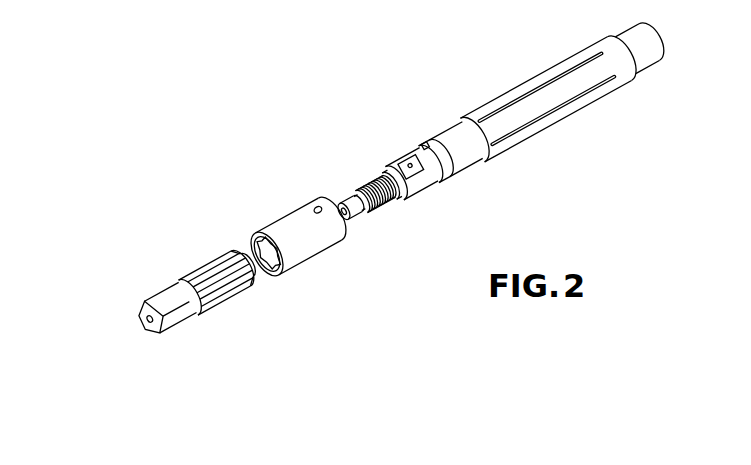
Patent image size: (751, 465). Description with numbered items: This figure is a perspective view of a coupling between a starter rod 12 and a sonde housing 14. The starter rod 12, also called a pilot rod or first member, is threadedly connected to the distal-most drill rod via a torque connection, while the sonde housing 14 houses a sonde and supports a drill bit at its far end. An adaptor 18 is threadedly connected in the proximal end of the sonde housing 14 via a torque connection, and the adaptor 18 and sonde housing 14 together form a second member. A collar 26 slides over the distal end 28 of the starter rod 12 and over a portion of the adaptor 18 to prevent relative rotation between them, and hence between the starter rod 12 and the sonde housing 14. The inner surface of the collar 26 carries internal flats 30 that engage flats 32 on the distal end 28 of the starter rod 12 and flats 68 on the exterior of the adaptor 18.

The starter rod 12 is at (167, 327).
The sonde housing 14 is at (568, 113).
The adaptor 18 is at (394, 197).
The collar 26 is at (318, 257).
The distal end of the starter rod 28 is at (230, 300).
The internal flats 30 is at (268, 263).
The flats 32 is at (219, 272).
The flats 68 is at (420, 178).